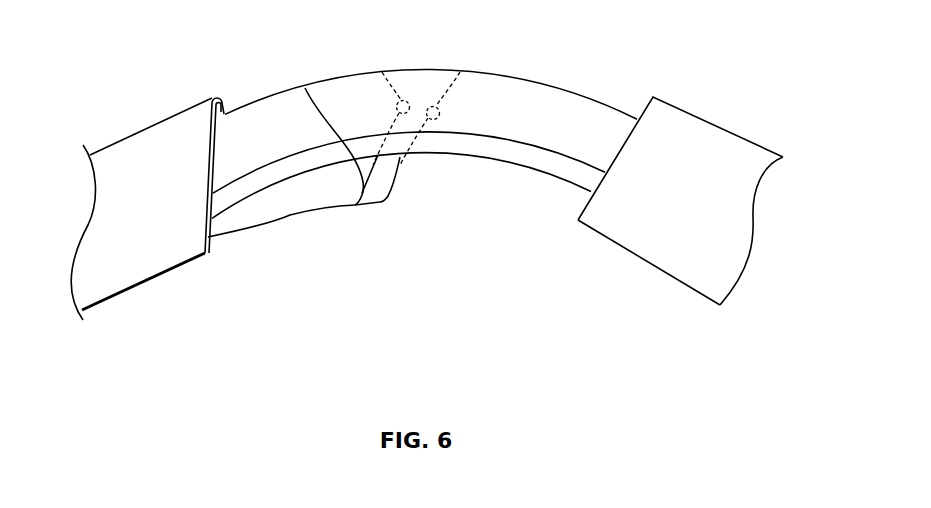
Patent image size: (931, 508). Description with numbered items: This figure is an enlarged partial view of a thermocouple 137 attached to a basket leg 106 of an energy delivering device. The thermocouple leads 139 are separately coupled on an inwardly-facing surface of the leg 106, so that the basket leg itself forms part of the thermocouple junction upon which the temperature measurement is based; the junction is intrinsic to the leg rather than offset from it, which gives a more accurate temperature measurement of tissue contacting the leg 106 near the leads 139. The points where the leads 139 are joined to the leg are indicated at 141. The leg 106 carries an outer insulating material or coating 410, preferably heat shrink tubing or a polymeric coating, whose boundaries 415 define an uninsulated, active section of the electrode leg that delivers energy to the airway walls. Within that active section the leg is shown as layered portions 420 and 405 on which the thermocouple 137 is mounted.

The band 106 is at (560, 88).
The strap assembly 137 is at (318, 241).
The strap 139 is at (305, 88).
The fastener holes 141 is at (382, 71).
The lower band layer 405 is at (555, 168).
The end plate 410 is at (160, 120).
The fold 415 is at (223, 93).
The upper band layer 420 is at (497, 138).